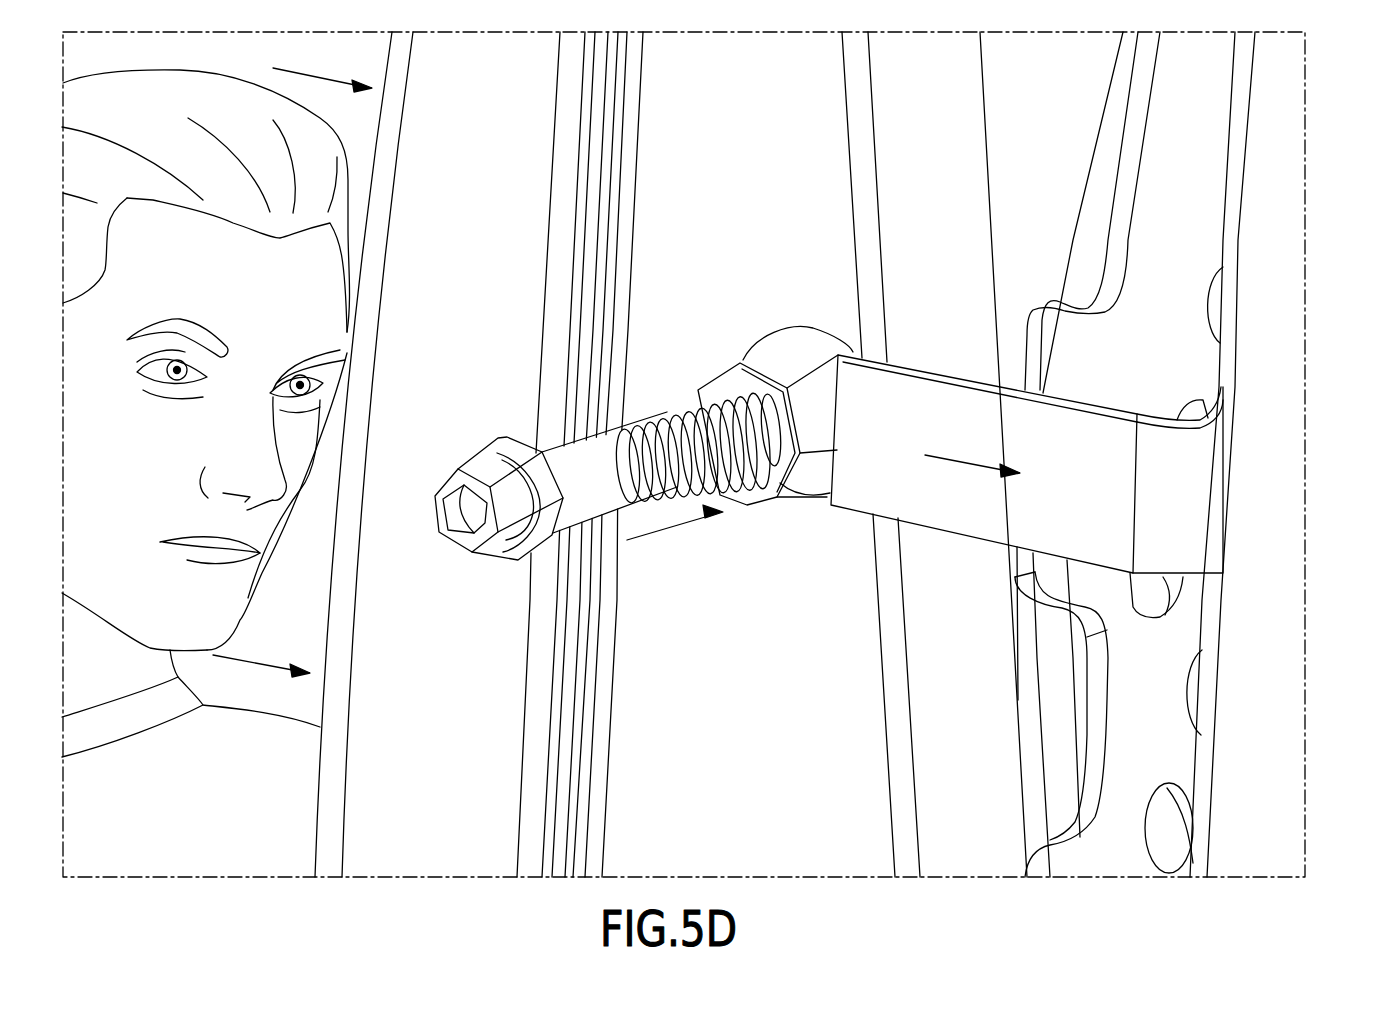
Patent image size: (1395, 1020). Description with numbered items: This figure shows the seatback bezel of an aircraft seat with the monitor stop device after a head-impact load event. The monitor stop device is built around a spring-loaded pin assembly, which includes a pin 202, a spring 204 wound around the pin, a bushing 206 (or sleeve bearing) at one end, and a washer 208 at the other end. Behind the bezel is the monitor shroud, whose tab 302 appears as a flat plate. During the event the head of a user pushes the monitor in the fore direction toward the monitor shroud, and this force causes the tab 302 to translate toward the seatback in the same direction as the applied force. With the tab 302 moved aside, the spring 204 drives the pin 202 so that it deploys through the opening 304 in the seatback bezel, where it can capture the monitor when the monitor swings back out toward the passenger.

The pin 202 is at (587, 460).
The spring 204 is at (650, 410).
The bushing 206 is at (502, 533).
The washer 208 is at (722, 378).
The tab 302 is at (1097, 498).
The opening 304 is at (807, 345).